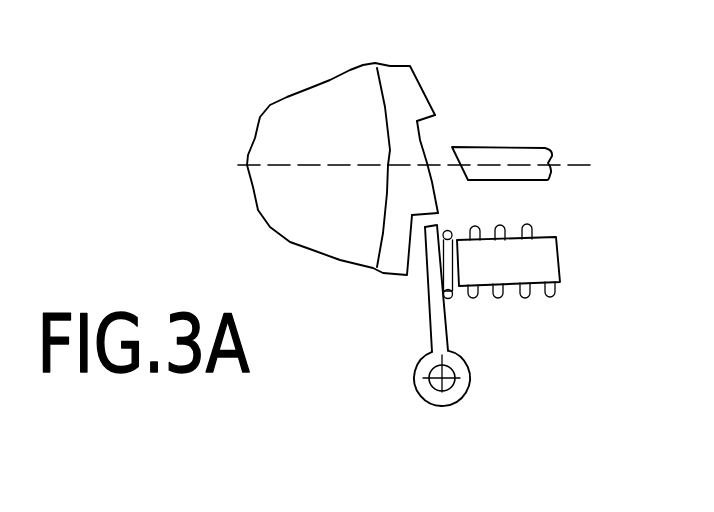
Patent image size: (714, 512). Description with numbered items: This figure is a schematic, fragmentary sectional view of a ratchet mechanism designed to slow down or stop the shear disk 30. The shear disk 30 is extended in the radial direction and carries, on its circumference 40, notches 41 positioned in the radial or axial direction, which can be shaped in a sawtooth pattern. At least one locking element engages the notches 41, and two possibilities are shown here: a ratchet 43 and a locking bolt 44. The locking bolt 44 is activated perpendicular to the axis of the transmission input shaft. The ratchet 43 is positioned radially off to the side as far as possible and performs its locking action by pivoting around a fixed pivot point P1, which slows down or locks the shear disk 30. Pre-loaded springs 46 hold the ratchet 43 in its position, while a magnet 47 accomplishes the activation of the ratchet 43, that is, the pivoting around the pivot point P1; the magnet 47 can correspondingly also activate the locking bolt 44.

The shear disk 30 is at (427, 201).
The notches 41 is at (433, 122).
The circumference 40 is at (437, 185).
The locking bolt 44 is at (515, 157).
The magnet 47 is at (525, 273).
The pre-loaded springs 46 is at (530, 298).
The ratchet 43 is at (462, 383).
The pivot point P1 is at (448, 383).